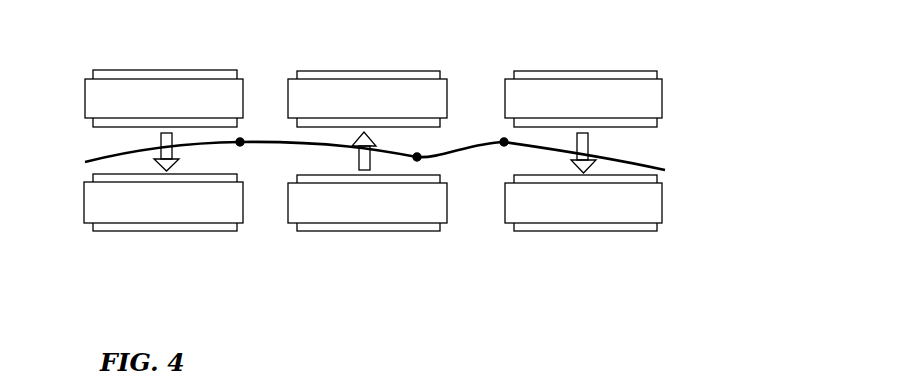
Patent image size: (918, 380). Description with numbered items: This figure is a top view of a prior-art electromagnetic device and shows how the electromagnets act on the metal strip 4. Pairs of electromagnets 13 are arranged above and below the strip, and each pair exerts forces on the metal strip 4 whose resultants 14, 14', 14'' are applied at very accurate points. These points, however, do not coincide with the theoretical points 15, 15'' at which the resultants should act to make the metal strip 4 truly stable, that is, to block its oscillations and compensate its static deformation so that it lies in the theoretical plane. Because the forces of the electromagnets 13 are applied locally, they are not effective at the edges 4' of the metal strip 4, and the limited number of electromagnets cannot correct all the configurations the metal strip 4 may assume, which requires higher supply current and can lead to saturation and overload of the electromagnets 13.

The electromagnet 13 is at (643, 94).
The metal strip 4 is at (426, 135).
The edges of the metal strip 4' is at (390, 145).
The resultant 14 is at (551, 97).
The resultant 14' is at (335, 95).
The resultant 14'' is at (135, 96).
The theoretical point 15 is at (506, 214).
The theoretical point 15'' is at (284, 213).